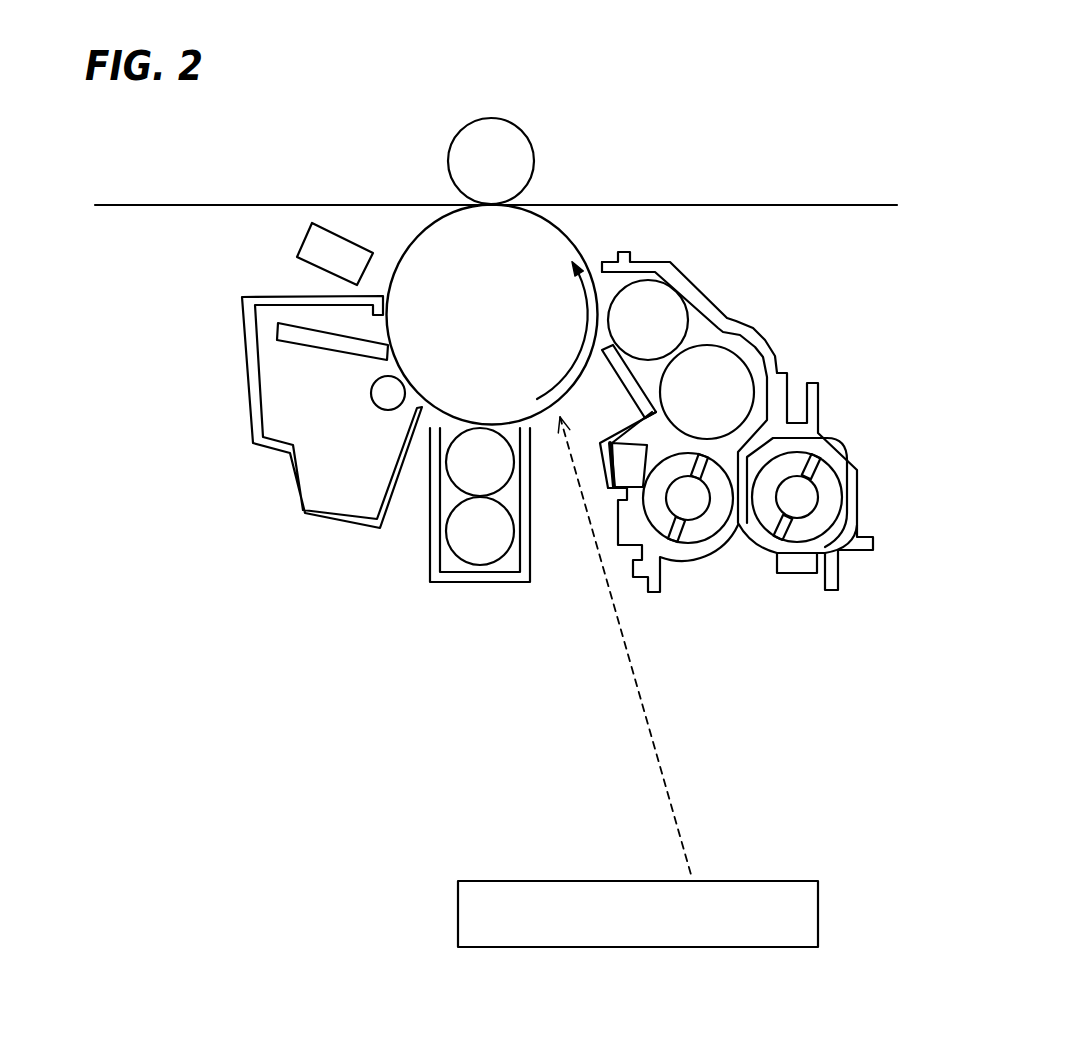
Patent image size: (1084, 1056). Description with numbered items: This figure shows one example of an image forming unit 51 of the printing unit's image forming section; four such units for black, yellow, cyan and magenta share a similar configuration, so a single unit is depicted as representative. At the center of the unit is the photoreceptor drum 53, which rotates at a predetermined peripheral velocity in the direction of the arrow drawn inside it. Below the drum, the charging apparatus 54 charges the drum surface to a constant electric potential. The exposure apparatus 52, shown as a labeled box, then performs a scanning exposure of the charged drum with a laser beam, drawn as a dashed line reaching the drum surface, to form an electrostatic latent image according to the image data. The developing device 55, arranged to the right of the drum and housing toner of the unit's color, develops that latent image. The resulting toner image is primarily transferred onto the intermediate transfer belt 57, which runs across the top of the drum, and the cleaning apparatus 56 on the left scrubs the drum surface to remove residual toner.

The image forming unit 51 is at (340, 627).
The exposure apparatus 52 is at (808, 898).
The photoreceptor drum 53 is at (543, 243).
The charging apparatus 54 is at (480, 583).
The developing device 55 is at (717, 297).
The cleaning apparatus 56 is at (252, 398).
The intermediate transfer belt 57 is at (835, 203).